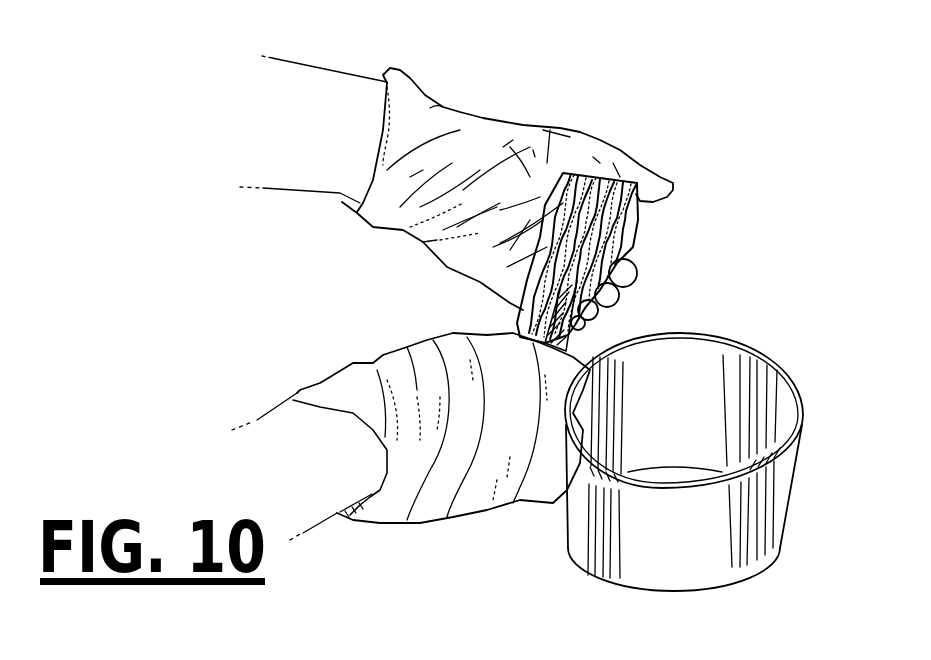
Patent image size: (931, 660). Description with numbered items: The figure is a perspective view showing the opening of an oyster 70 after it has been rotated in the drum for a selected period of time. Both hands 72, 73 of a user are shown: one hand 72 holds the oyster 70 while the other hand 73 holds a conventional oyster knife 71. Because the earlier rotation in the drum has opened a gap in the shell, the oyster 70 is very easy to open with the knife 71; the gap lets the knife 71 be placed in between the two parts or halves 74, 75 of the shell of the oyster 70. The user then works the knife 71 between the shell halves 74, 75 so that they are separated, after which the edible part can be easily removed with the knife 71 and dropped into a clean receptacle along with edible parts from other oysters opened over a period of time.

The oyster 70 is at (633, 230).
The oyster knife 71 is at (573, 340).
The hand 72 is at (520, 125).
The hand 73 is at (513, 507).
The shell half 74 is at (483, 284).
The shell half 75 is at (637, 192).